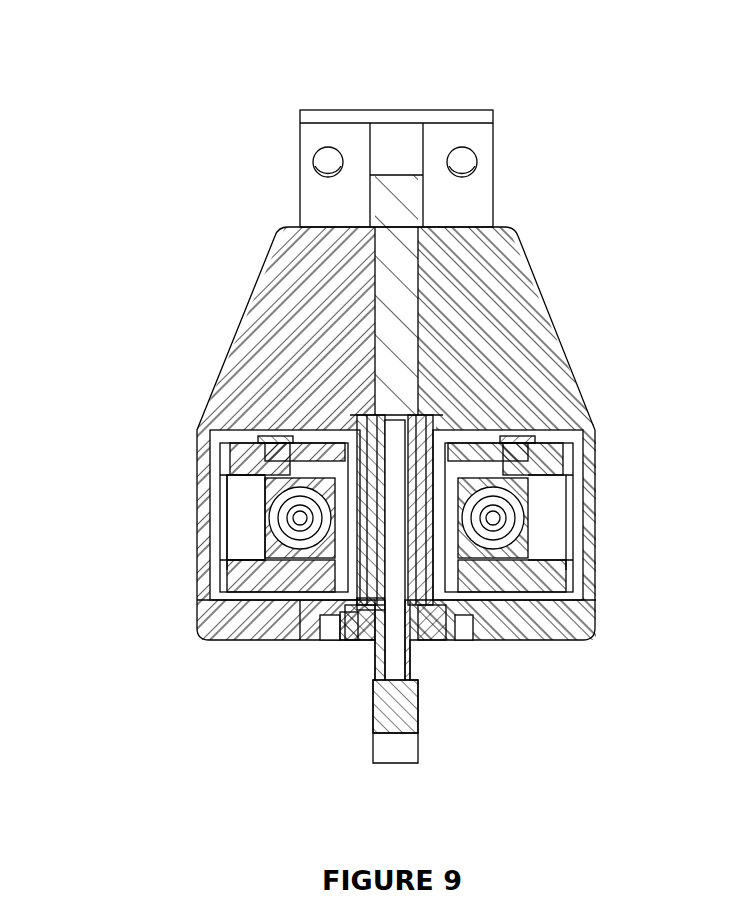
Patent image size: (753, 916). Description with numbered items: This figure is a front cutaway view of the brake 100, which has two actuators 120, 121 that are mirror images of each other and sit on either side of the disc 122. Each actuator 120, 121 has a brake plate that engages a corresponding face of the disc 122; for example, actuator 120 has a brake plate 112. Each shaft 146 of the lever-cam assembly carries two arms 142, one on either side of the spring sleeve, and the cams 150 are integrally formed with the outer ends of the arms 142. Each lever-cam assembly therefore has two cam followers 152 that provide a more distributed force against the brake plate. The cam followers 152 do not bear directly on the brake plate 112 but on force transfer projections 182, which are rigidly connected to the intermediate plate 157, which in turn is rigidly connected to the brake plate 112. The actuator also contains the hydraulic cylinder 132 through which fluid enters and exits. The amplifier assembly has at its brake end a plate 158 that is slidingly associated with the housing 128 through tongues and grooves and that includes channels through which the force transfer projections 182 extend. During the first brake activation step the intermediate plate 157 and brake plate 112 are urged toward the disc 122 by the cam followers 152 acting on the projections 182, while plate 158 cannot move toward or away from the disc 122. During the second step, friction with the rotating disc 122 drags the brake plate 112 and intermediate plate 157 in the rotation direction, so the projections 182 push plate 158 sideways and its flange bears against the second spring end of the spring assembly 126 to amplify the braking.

The brake 100 is at (172, 108).
The brake plate 112 is at (380, 608).
The actuator 120 is at (189, 469).
The actuator 121 is at (623, 446).
The disc 122 is at (423, 663).
The spring assembly 126 is at (273, 502).
The housing 128 is at (198, 615).
The hydraulic cylinder 132 is at (256, 548).
The arm 142 is at (218, 467).
The shaft 146 is at (225, 535).
The cam 150 is at (248, 447).
The cam follower 152 is at (279, 437).
The intermediate plate 157 is at (370, 608).
The plate 158 is at (355, 625).
The force transfer projection 182 is at (303, 603).